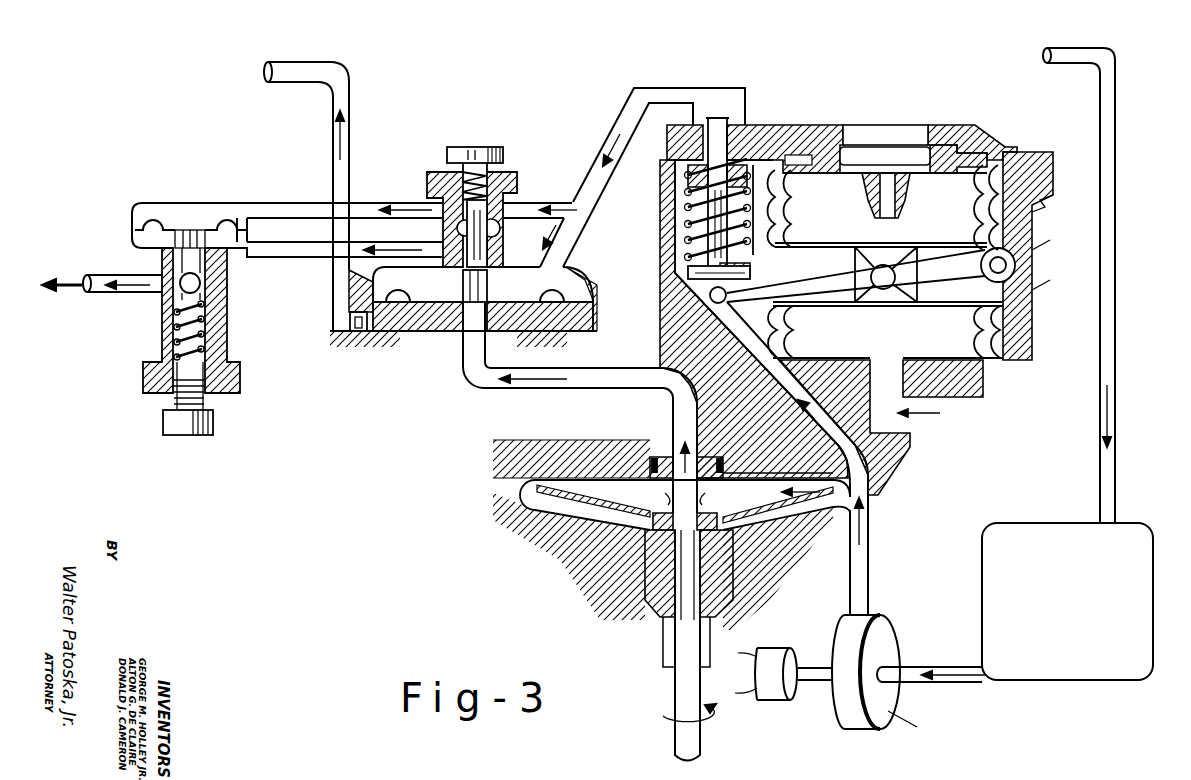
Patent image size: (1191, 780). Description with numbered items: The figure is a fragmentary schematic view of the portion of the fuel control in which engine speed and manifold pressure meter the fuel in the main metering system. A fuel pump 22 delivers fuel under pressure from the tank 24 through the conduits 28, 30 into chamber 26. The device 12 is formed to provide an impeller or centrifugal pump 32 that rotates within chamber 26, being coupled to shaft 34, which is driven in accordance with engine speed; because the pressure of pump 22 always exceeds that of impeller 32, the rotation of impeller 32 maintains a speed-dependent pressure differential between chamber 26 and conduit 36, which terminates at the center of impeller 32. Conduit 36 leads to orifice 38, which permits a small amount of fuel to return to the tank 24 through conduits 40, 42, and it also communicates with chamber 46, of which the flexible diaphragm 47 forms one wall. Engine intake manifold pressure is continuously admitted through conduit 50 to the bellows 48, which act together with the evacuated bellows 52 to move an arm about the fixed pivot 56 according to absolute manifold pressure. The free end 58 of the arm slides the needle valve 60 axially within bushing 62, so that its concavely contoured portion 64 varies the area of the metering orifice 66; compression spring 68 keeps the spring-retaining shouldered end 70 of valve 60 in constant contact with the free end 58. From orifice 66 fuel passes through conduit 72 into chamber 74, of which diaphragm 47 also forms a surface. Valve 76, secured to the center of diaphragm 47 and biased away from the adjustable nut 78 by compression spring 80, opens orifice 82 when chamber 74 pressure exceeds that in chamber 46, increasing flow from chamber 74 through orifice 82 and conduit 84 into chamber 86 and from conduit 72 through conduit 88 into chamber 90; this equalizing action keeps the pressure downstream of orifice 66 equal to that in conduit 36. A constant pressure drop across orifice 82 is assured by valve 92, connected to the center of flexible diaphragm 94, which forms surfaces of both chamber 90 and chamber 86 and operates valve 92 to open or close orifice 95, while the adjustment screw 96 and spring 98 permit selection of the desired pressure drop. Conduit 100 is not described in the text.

The device 12 is at (880, 470).
The fuel pump 22 is at (885, 628).
The tank 24 is at (1120, 683).
The chamber 26 is at (840, 463).
The conduit 28 is at (957, 668).
The conduit 30 is at (865, 530).
The centrifugal pump 32 is at (770, 505).
The shaft 34 is at (683, 687).
The conduit 36 is at (632, 375).
The orifice 38 is at (360, 330).
The conduit 40 is at (322, 70).
The conduit 42 is at (1077, 55).
The chamber 46 is at (563, 320).
The flexible diaphragm 47 is at (525, 302).
The bellows 48 is at (1003, 323).
The conduit 50 is at (920, 394).
The evacuated bellows 52 is at (993, 210).
The fixed pivot 56 is at (1000, 264).
The free end 58 is at (723, 303).
The needle valve 60 is at (752, 259).
The bushing 62 is at (750, 187).
The concavely contoured portion 64 is at (753, 148).
The orifice 66 is at (730, 125).
The compression spring 68 is at (688, 225).
The spring-retaining shouldered end 70 is at (710, 280).
The conduit 72 is at (638, 107).
The chamber 74 is at (570, 277).
The valve 76 is at (484, 250).
The adjustable nut 78 is at (460, 170).
The compression spring 80 is at (490, 200).
The orifice 82 is at (463, 271).
The conduit 84 is at (322, 257).
The chamber 86 is at (240, 249).
The conduit 88 is at (410, 207).
The chamber 90 is at (171, 212).
The valve 92 is at (160, 300).
The flexible diaphragm 94 is at (243, 222).
The orifice 95 is at (178, 250).
The adjustment screw 96 is at (210, 432).
The spring 98 is at (205, 320).
The conduit to chamber 102 100 is at (103, 278).